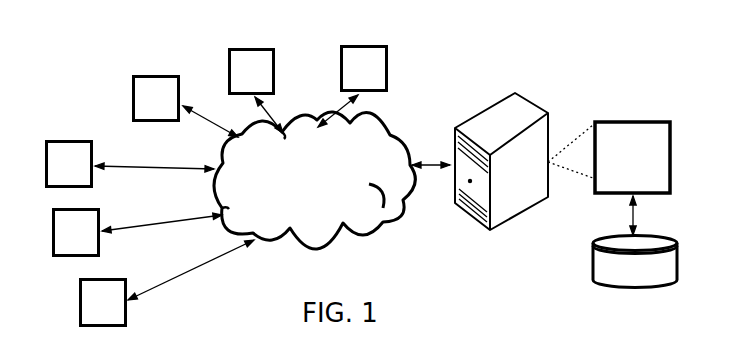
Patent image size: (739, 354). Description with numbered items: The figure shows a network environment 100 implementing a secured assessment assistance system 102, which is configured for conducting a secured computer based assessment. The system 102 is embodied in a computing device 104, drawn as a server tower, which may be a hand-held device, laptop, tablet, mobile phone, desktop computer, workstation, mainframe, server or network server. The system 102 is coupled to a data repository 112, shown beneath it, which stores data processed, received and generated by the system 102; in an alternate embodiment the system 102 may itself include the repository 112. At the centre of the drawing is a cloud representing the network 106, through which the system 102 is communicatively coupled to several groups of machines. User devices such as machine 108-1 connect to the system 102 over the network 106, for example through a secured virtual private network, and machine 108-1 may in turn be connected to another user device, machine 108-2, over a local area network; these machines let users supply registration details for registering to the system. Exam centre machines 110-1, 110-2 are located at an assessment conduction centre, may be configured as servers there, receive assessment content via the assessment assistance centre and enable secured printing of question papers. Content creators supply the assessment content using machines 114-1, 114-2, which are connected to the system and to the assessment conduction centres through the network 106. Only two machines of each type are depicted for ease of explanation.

The network environment 100 is at (415, 277).
The secured assessment assistance system 102 is at (618, 122).
The computing device 104 is at (527, 96).
The network 106 is at (325, 190).
The machine 108-1 is at (152, 75).
The machine 108-2 is at (95, 156).
The exam centre machine 110-1 is at (102, 222).
The exam centre machine 110-2 is at (100, 278).
The repository 112 is at (592, 258).
The machine 114-1 is at (254, 48).
The machine 114-2 is at (389, 57).